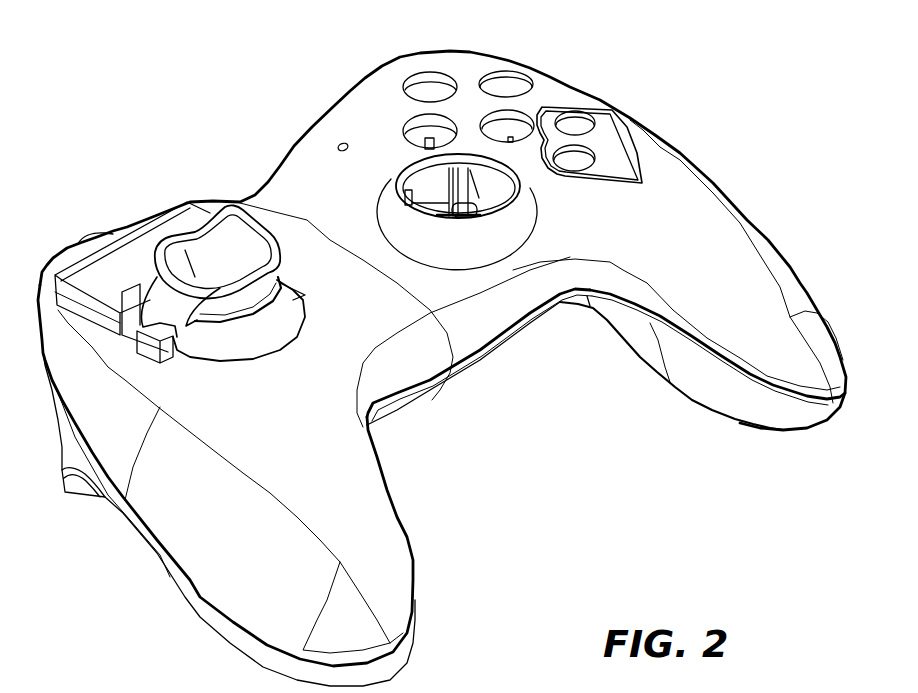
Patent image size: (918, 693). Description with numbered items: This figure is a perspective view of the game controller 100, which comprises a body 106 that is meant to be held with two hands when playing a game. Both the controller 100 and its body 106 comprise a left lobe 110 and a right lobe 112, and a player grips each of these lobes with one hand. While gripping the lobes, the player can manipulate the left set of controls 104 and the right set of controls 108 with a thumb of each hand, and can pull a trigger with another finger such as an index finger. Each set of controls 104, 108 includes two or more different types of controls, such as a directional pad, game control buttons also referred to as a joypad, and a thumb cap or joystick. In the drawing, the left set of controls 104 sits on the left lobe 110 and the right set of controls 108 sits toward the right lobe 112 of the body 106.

The game controller 100 is at (205, 84).
The left set of controls 104 is at (100, 228).
The body 106 is at (407, 397).
The right set of controls 108 is at (449, 47).
The left lobe 110 is at (250, 580).
The right lobe 112 is at (729, 300).